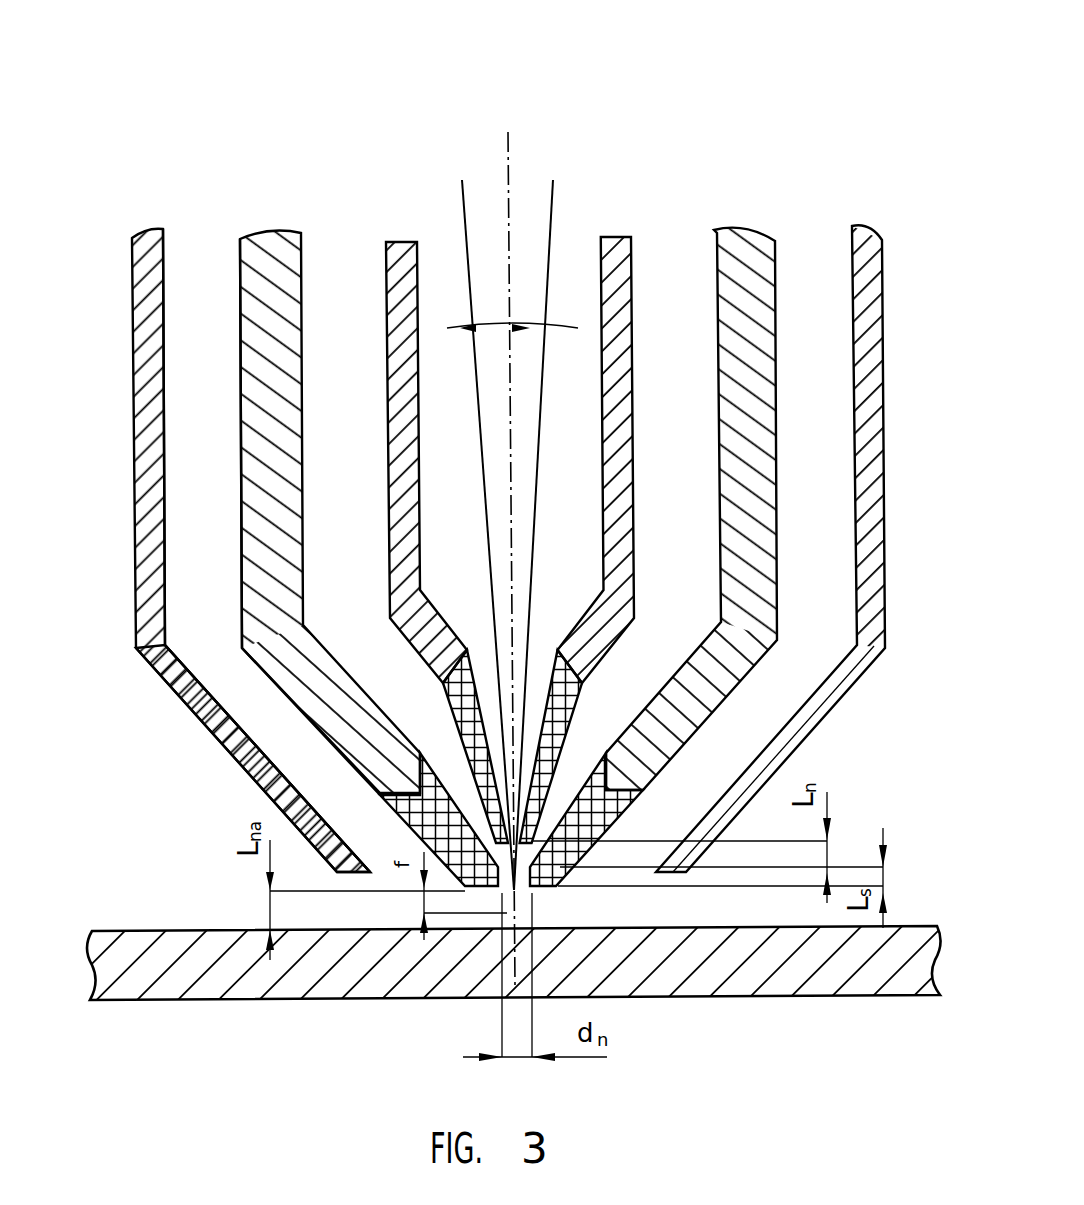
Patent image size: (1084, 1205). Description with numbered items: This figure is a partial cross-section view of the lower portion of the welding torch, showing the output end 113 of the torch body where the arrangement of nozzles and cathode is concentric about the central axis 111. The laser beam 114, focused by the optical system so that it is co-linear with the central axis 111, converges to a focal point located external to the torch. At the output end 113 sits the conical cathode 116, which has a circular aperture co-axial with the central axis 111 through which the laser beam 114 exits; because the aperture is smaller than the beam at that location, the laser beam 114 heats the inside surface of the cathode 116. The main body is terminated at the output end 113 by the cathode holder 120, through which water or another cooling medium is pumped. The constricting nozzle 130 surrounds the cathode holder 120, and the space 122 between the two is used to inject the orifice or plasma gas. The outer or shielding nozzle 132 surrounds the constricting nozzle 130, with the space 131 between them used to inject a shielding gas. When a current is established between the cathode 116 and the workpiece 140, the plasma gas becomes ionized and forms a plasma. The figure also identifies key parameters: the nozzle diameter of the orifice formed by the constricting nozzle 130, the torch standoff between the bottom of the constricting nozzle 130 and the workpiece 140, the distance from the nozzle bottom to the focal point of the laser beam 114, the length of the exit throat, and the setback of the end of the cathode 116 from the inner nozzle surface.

The central axis 111 is at (510, 133).
The laser beam 114 is at (553, 210).
The cathode holder 120 is at (622, 488).
The space 122 is at (673, 283).
The space 131 is at (203, 280).
The outer or shielding nozzle 132 is at (147, 598).
The constricting nozzle 130 is at (343, 733).
The output end 113 is at (613, 640).
The conical cathode 116 is at (573, 715).
The workpiece 140 is at (905, 945).